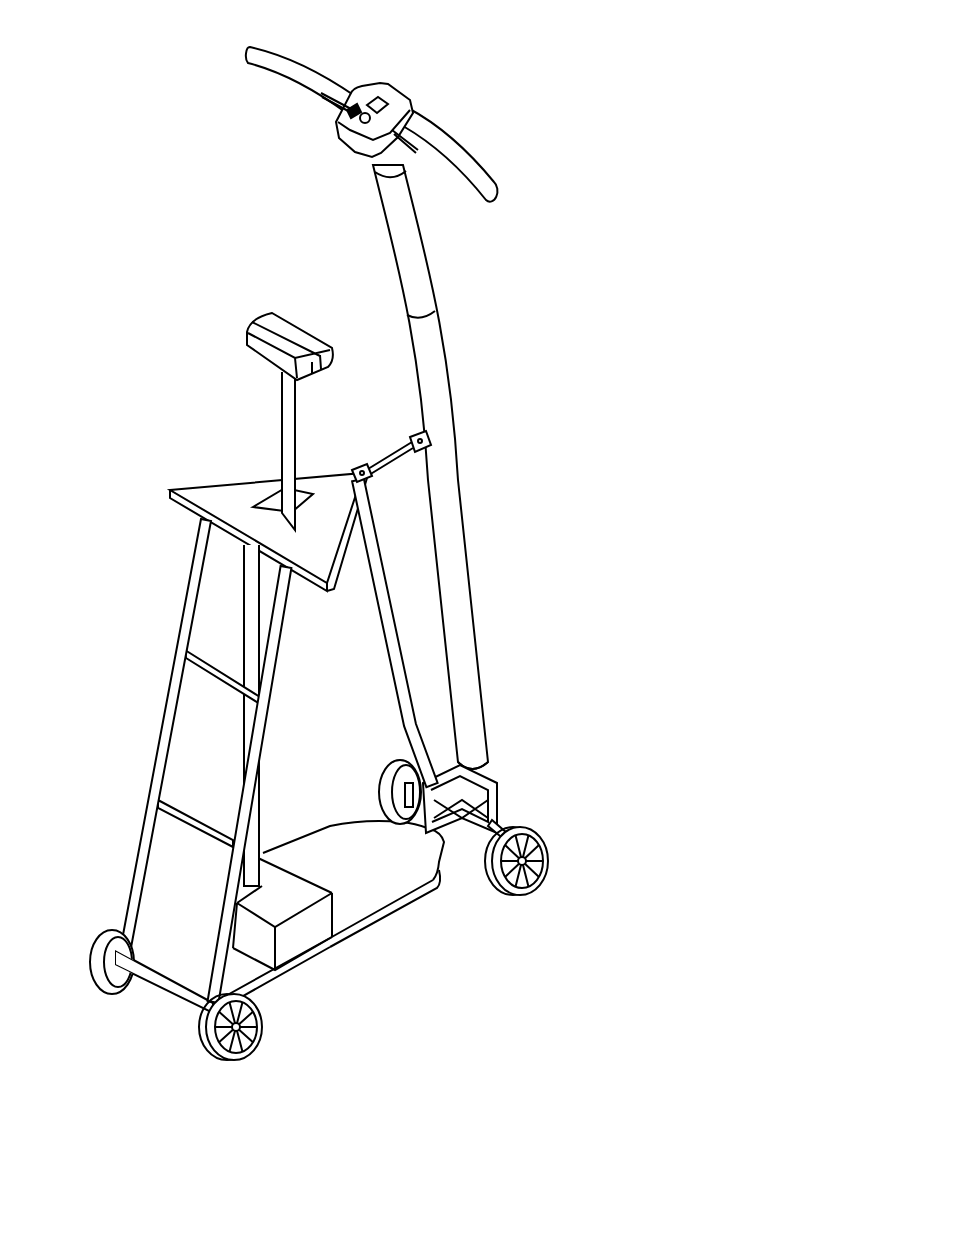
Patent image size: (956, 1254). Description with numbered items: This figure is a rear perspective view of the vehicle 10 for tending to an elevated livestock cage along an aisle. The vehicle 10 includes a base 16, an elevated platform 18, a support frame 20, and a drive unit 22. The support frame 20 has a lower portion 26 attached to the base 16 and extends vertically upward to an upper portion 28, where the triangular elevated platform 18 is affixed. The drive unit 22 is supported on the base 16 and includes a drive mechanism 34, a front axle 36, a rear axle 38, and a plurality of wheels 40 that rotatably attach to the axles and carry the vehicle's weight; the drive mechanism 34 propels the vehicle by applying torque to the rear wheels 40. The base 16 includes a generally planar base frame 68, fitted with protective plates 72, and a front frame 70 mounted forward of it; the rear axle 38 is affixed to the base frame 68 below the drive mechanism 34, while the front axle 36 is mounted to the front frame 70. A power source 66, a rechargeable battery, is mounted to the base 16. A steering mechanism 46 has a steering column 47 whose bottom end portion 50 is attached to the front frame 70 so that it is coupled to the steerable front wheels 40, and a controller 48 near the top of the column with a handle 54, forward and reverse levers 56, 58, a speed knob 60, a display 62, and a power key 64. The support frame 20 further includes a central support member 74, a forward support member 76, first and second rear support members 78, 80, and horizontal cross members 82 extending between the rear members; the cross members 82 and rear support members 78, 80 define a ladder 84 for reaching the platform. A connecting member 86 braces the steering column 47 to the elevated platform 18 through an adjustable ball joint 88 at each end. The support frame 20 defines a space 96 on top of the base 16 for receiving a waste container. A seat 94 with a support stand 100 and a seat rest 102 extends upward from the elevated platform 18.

The vehicle 10 is at (594, 140).
The base 16 is at (359, 939).
The elevated platform 18 is at (217, 490).
The support frame 20 is at (106, 627).
The drive unit 22 is at (264, 848).
The lower portion 26 is at (119, 914).
The upper portion 28 is at (181, 537).
The drive mechanism 34 is at (257, 970).
The front axle 36 is at (494, 836).
The rear axle 38 is at (177, 1003).
The wheels 40 is at (402, 766).
The steering mechanism 46 is at (490, 449).
The steering column 47 is at (446, 413).
The controller 48 is at (413, 86).
The bottom end portion 50 is at (488, 744).
The handle 54 is at (470, 151).
The forward lever 56 is at (413, 121).
The reverse lever 58 is at (330, 104).
The speed knob 60 is at (356, 147).
The display 62 is at (378, 97).
The power key 64 is at (353, 105).
The power source 66 is at (315, 940).
The base frame 68 is at (410, 899).
The front frame 70 is at (492, 794).
The protective plates 72 is at (187, 925).
The central support member 74 is at (243, 638).
The forward support member 76 is at (377, 565).
The first rear support member 78 is at (291, 623).
The second rear support member 80 is at (191, 580).
The horizontal cross members 82 is at (213, 672).
The ladder 84 is at (162, 718).
The connecting member 86 is at (397, 455).
The ball joint 88 is at (417, 435).
The seat 94 is at (251, 313).
The space 96 is at (323, 776).
The support stand 100 is at (281, 402).
The seat rest 102 is at (290, 331).